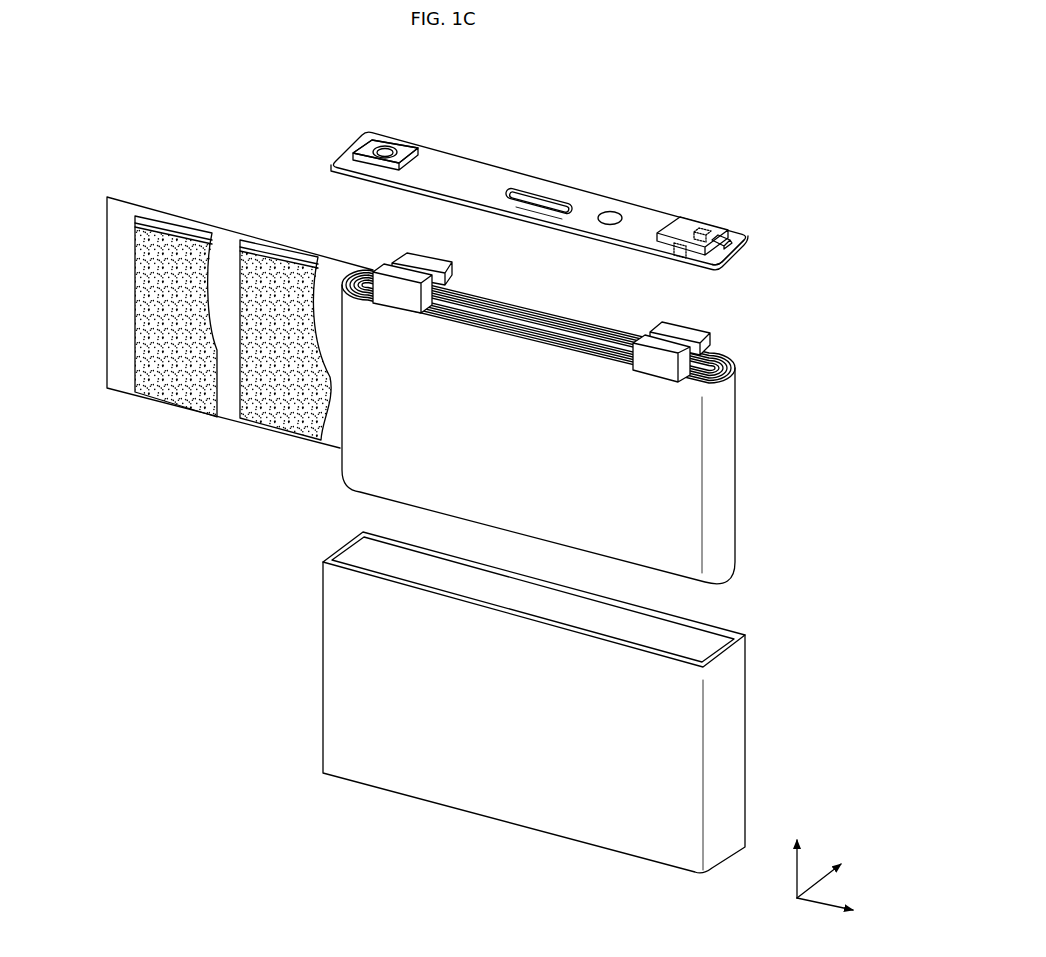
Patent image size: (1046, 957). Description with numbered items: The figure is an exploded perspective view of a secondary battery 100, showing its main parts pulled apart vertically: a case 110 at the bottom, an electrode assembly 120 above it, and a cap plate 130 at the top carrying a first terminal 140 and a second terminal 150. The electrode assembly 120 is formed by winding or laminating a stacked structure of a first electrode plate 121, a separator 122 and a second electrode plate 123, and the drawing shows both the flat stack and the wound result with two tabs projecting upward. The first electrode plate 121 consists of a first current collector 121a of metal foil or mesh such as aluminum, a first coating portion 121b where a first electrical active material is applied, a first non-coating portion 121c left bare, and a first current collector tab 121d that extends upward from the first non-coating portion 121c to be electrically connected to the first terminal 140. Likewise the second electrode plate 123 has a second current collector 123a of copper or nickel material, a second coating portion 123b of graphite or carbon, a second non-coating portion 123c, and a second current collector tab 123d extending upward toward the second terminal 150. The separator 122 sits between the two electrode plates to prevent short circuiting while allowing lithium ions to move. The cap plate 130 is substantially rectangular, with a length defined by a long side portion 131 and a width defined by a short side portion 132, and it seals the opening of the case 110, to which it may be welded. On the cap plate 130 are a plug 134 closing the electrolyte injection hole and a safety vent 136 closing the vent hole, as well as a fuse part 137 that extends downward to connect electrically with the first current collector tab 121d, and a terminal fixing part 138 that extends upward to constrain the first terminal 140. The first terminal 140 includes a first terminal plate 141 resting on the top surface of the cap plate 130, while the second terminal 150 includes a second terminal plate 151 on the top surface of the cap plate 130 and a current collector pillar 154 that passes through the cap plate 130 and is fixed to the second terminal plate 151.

The secondary battery 100 is at (815, 129).
The case 110 is at (497, 802).
The electrode assembly 120 is at (581, 398).
The first electrode plate 121 is at (128, 285).
The first current collector 121a is at (135, 229).
The first coating portion 121b is at (145, 261).
The first non-coating portion 121c is at (172, 223).
The first current collector tab 121d is at (681, 331).
The separator 122 is at (120, 384).
The second electrode plate 123 is at (183, 311).
The second current collector 123a is at (238, 305).
The second coating portion 123b is at (253, 332).
The second non-coating portion 123c is at (277, 250).
The second current collector tab 123d is at (420, 260).
The cap plate 130 is at (483, 175).
The long side portion 131 is at (525, 172).
The short side portion 132 is at (734, 258).
The plug 134 is at (612, 217).
The safety vent 136 is at (556, 205).
The fuse part 137 is at (702, 230).
The terminal fixing part 138 is at (728, 233).
The first terminal 140 is at (733, 210).
The first terminal plate 141 is at (683, 216).
The second terminal 150 is at (411, 124).
The second terminal plate 151 is at (388, 139).
The current collector pillar 154 is at (381, 146).